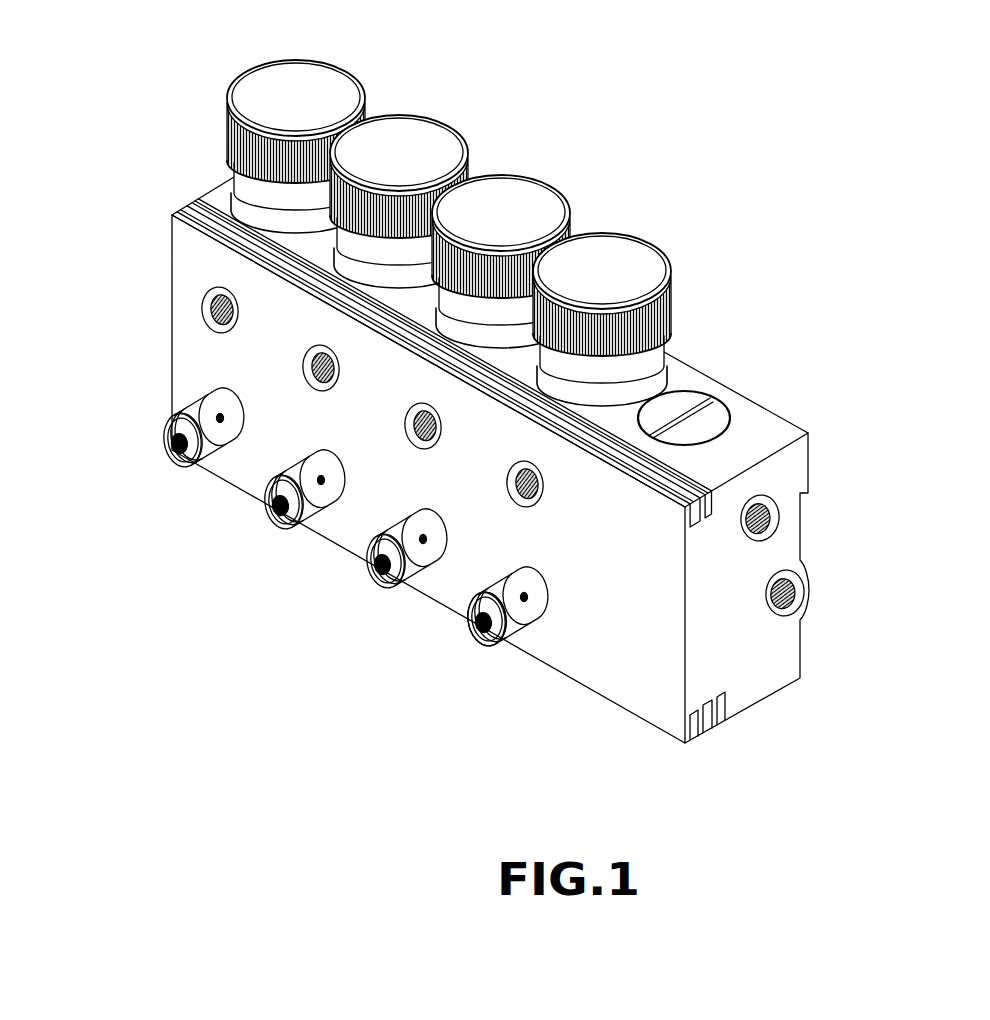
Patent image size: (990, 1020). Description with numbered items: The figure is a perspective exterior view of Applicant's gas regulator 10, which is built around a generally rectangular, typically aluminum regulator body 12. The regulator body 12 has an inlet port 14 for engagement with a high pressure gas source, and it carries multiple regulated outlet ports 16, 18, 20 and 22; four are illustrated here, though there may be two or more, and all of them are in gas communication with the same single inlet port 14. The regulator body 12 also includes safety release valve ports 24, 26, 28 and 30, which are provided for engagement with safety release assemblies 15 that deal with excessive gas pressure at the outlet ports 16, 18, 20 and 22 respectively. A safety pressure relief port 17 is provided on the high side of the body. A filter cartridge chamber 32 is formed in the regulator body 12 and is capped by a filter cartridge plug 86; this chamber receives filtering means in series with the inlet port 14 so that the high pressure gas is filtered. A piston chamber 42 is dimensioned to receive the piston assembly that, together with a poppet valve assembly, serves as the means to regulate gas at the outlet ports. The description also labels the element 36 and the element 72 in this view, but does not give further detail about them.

The gas regulator 10 is at (514, 395).
The regulator body 12 is at (822, 472).
The inlet port 14 is at (767, 520).
The safety release assembly 15 is at (476, 632).
The regulated outlet port 16 is at (524, 495).
The safety pressure relief port 17 is at (790, 592).
The regulated outlet port 18 is at (437, 442).
The regulated outlet port 20 is at (308, 378).
The regulated outlet port 22 is at (230, 320).
The safety release valve port 24 is at (540, 640).
The safety release valve port 26 is at (422, 577).
The safety release valve port 28 is at (318, 510).
The safety release valve port 30 is at (213, 460).
The filter cartridge chamber 32 is at (727, 418).
The mounting slots 36 is at (700, 733).
The piston chamber 42 is at (233, 200).
The adjustment knob 72 is at (347, 70).
The filter cartridge plug 86 is at (682, 403).